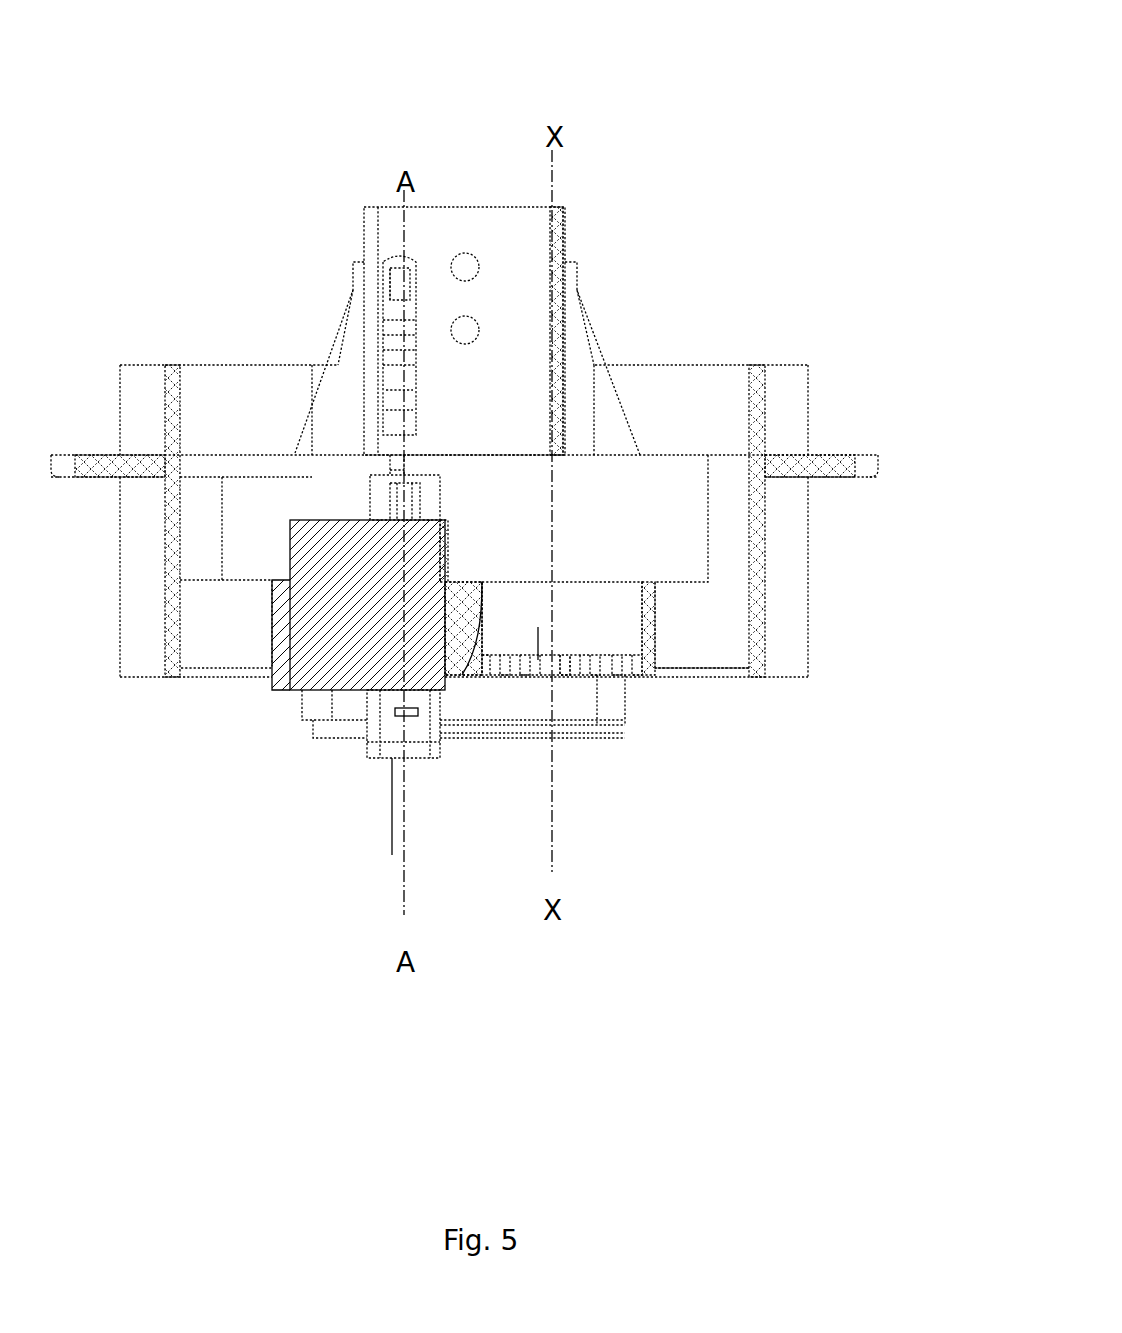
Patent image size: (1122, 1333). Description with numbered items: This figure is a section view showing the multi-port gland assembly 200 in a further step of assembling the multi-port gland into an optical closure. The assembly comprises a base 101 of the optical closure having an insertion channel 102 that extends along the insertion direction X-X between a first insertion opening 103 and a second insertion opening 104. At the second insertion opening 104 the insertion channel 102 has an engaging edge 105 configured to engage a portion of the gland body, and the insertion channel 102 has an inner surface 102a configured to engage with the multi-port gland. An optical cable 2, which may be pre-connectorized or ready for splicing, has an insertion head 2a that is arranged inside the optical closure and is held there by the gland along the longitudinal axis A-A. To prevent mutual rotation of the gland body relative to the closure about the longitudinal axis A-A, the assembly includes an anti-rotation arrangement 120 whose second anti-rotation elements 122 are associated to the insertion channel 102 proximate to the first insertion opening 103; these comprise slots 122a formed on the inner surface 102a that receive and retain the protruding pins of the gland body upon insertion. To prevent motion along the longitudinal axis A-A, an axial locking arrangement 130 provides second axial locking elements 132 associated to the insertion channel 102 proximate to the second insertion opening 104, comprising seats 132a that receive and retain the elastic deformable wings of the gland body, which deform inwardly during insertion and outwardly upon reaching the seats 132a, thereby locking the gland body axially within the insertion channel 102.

The multi-port gland assembly 200 is at (697, 178).
The base 101 is at (770, 657).
The insertion channel 102 is at (580, 590).
The inner surface 102a is at (538, 627).
The first insertion opening 103 is at (570, 675).
The second insertion opening 104 is at (612, 580).
The engaging edge 105 is at (278, 577).
The anti-rotation arrangement 120 is at (275, 672).
The second anti-rotation elements 122 is at (617, 663).
The slots 122a is at (585, 678).
The axial locking arrangement 130 is at (447, 565).
The second axial locking elements 132 is at (647, 578).
The seats 132a is at (452, 725).
The optical cable 2 is at (388, 798).
The insertion head 2a is at (380, 335).